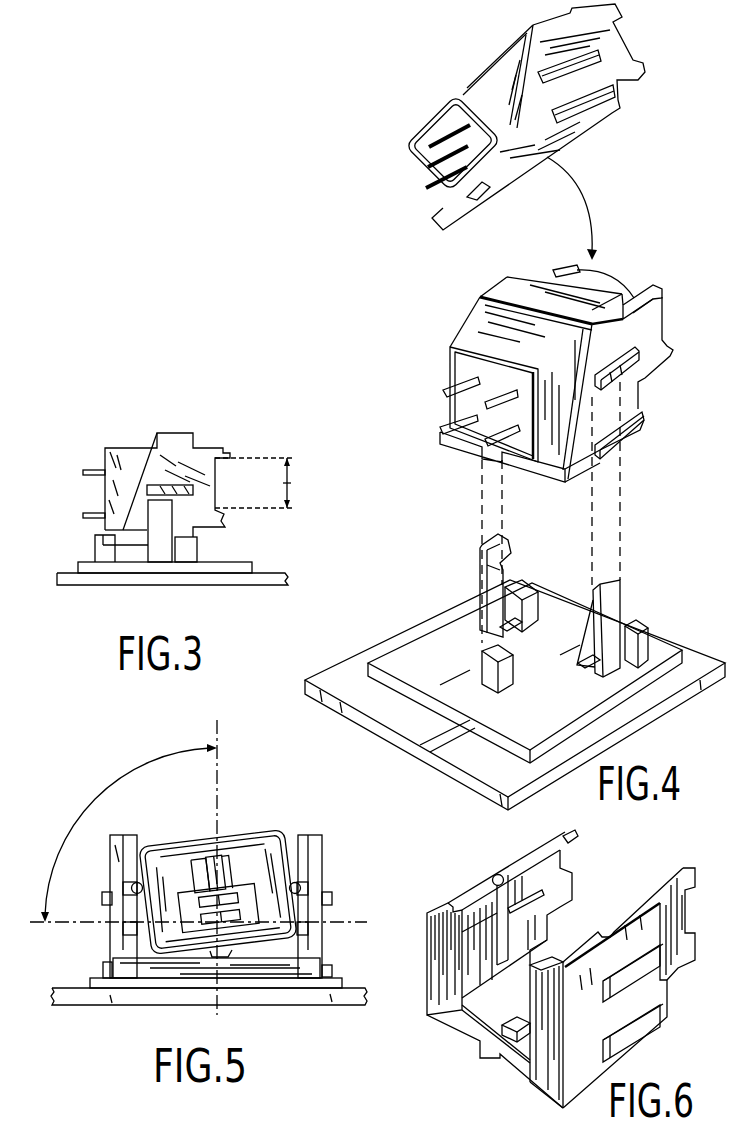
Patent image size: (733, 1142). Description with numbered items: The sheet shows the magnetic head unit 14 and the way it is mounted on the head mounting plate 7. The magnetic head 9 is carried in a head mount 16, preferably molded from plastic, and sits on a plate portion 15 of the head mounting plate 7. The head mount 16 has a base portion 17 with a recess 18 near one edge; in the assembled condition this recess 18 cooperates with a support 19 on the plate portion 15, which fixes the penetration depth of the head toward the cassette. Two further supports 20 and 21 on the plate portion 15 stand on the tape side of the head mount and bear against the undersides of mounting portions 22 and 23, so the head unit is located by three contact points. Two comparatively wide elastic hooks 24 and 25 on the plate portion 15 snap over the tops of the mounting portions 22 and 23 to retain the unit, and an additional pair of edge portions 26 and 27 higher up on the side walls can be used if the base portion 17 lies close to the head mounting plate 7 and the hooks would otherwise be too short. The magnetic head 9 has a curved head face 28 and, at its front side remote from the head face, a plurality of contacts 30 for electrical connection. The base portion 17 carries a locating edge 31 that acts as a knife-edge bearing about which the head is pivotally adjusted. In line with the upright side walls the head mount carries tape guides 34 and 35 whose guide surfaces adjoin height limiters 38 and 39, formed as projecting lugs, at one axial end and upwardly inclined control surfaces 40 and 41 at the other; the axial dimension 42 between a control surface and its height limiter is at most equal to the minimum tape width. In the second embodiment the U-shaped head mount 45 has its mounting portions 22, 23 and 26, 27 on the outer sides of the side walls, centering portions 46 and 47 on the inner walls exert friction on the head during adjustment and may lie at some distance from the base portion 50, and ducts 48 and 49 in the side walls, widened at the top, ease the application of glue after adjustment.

In FIG. 3, the head mounting plate 7 is at (77, 580).
In FIG. 4, the head mounting plate 7 is at (663, 707).
In FIG. 5, the head mounting plate 7 is at (209, 996).
In FIG. 5, the magnetic head 9 is at (247, 843).
In FIG. 3, the magnetic head unit 14 is at (209, 440).
In FIG. 4, the magnetic head unit 14 is at (609, 137).
In FIG. 6, the magnetic head unit 14 is at (555, 970).
In FIG. 3, the plate portion 15 is at (238, 568).
In FIG. 4, the plate portion 15 is at (667, 655).
In FIG. 3, the head mount 16 is at (176, 433).
In FIG. 4, the head mount 16 is at (502, 287).
In FIG. 4, the base portion 17 is at (553, 482).
In FIG. 4, the recess 18 is at (493, 460).
In FIG. 6, the recess 18 is at (480, 1047).
In FIG. 3, the support 19 is at (103, 552).
In FIG. 4, the support 19 is at (513, 673).
In FIG. 4, the support 20 is at (520, 592).
In FIG. 4, the support 21 is at (643, 630).
In FIG. 5, the mounting portion 22 is at (332, 973).
In FIG. 3, the mounting portion 23 is at (184, 549).
In FIG. 4, the mounting portion 23 is at (620, 450).
In FIG. 5, the mounting portion 23 is at (105, 970).
In FIG. 6, the mounting portion 23 is at (633, 1037).
In FIG. 4, the elastic hook 24 is at (480, 556).
In FIG. 3, the elastic hook 25 is at (160, 553).
In FIG. 4, the elastic hook 25 is at (617, 595).
In FIG. 5, the edge portion 26 is at (332, 898).
In FIG. 3, the edge portion 27 is at (165, 485).
In FIG. 4, the edge portion 27 is at (628, 363).
In FIG. 5, the edge portion 27 is at (103, 898).
In FIG. 6, the edge portion 27 is at (640, 972).
In FIG. 5, the head face 28 is at (253, 923).
In FIG. 3, the contacts 30 is at (83, 473).
In FIG. 4, the contacts 30 is at (418, 168).
In FIG. 5, the locating edge 31 is at (213, 953).
In FIG. 6, the locating edge 31 is at (523, 1035).
In FIG. 6, the tape guide 34 is at (566, 871).
In FIG. 3, the tape guide 35 is at (212, 489).
In FIG. 4, the tape guide 35 is at (656, 310).
In FIG. 6, the tape guide 35 is at (692, 916).
In FIG. 4, the height limiter 38 is at (563, 273).
In FIG. 5, the height limiter 38 is at (305, 843).
In FIG. 6, the height limiter 38 is at (575, 836).
In FIG. 3, the height limiter 39 is at (228, 450).
In FIG. 4, the height limiter 39 is at (655, 283).
In FIG. 5, the height limiter 39 is at (130, 840).
In FIG. 6, the height limiter 39 is at (687, 870).
In FIG. 5, the control surface 40 is at (303, 927).
In FIG. 6, the control surface 40 is at (570, 888).
In FIG. 3, the control surface 41 is at (225, 520).
In FIG. 4, the control surface 41 is at (670, 350).
In FIG. 5, the control surface 41 is at (127, 928).
In FIG. 6, the control surface 41 is at (693, 937).
In FIG. 3, the axial dimension 42 is at (285, 484).
In FIG. 5, the head mount 45 is at (315, 863).
In FIG. 5, the centering portion 46 is at (300, 886).
In FIG. 5, the centering portion 47 is at (128, 881).
In FIG. 6, the duct 48 is at (498, 874).
In FIG. 6, the duct 49 is at (607, 930).
In FIG. 5, the base portion 50 is at (148, 970).